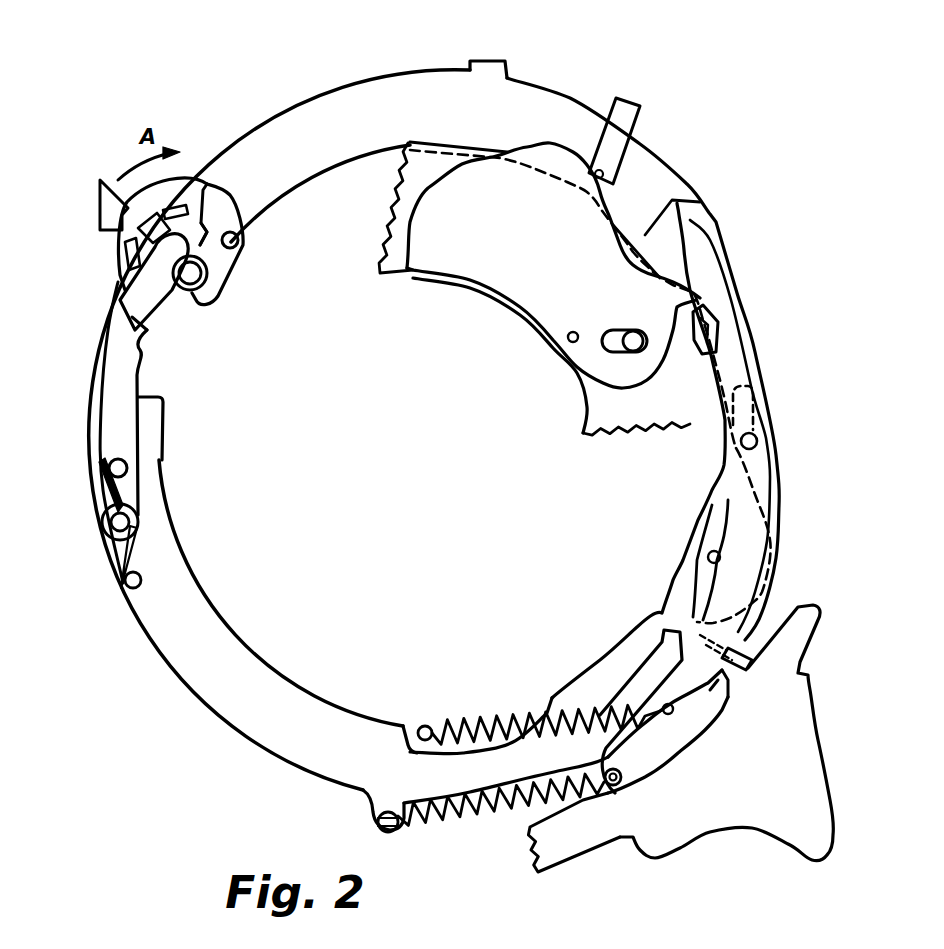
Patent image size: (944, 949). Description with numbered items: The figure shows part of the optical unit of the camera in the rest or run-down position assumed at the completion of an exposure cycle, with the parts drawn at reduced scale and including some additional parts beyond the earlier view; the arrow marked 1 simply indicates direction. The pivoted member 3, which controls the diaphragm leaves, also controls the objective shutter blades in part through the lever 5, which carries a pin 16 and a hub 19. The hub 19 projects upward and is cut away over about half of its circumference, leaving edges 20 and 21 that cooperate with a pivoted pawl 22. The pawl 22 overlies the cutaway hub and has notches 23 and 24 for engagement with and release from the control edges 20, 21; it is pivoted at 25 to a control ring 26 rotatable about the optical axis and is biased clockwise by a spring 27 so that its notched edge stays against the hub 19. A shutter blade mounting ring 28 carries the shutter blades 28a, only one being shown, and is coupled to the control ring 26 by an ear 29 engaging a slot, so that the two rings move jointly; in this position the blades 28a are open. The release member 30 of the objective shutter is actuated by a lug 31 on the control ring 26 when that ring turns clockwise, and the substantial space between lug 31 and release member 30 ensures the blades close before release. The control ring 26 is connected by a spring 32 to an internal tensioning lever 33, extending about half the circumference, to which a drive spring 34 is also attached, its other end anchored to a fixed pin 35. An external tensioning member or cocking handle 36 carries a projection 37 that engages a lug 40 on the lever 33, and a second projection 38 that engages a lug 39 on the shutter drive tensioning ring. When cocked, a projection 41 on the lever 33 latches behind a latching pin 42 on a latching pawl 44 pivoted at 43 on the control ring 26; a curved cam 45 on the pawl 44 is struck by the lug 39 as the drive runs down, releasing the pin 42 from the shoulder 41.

The direction arrow / actuating member 1 is at (99, 212).
The pivoted member 3 is at (200, 186).
The lever 5 is at (226, 203).
The pin 16 is at (246, 238).
The hub 19 is at (203, 290).
The edge 20 is at (178, 300).
The edge 21 is at (207, 255).
The pivoted pawl 22 is at (155, 320).
The notch 23 is at (170, 287).
The notch 24 is at (143, 352).
The pivot 25 is at (123, 520).
The control ring 26 is at (207, 630).
The spring 27 is at (120, 494).
The shutter blade mounting ring 28 is at (598, 407).
The shutter blade 28a is at (537, 287).
The ear 29 is at (707, 328).
The release member 30 is at (625, 125).
The lug 31 is at (490, 68).
The spring 32 is at (474, 797).
The internal tensioning lever 33 is at (631, 760).
The drive spring 34 is at (493, 715).
The fixed pin 35 is at (424, 726).
The external tensioning member 36 is at (753, 820).
The projection 37 is at (595, 800).
The second projection 38 is at (752, 667).
The lug 39 is at (748, 668).
The lug 40 is at (724, 695).
The projection 41 is at (670, 635).
The latching pin 42 is at (708, 552).
The pivot 43 is at (754, 440).
The latching pawl 44 is at (718, 480).
The cam 45 is at (765, 568).